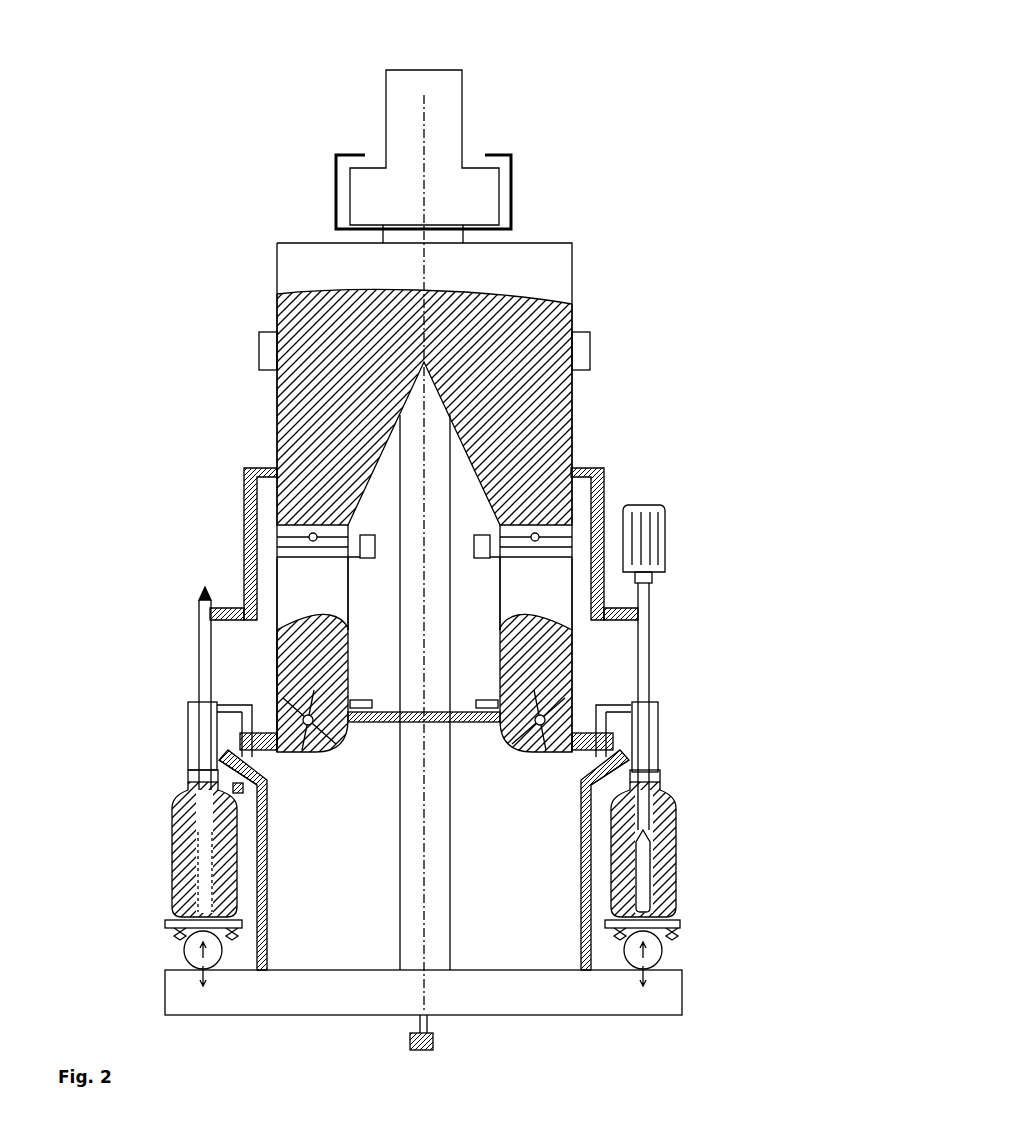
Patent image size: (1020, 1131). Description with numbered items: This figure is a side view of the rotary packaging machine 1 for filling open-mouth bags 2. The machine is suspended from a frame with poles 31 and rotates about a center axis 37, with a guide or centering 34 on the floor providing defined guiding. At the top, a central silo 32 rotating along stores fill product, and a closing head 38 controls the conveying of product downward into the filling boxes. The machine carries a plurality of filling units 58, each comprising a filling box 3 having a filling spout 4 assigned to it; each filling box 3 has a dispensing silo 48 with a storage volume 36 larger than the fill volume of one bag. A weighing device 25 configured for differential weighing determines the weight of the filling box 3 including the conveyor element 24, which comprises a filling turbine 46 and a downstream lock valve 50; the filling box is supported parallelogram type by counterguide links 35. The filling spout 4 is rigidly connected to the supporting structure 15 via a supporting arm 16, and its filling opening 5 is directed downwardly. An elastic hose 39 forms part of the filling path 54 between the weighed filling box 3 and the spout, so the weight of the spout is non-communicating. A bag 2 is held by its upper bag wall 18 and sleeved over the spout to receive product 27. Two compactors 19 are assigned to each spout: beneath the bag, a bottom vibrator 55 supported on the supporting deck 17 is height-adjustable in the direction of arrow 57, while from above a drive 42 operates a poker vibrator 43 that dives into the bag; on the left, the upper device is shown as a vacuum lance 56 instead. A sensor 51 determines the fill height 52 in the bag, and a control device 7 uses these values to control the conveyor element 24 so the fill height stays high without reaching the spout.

The packaging machine 1 is at (168, 78).
The open-mouth bag 2 is at (172, 902).
The filling box 3 is at (293, 551).
The filling spout 4 is at (186, 769).
The filling opening 5 is at (612, 791).
The control device 7 is at (262, 346).
The supporting structure 15 is at (398, 822).
The supporting arm 16 is at (266, 868).
The supporting deck 17 is at (372, 974).
The upper bag wall 18 is at (665, 772).
The compactor 19 is at (676, 588).
The conveyor element 24 is at (565, 632).
The weighing device 25 is at (368, 536).
The product 27 is at (172, 820).
The pole 31 is at (333, 150).
The silo 32 is at (540, 262).
The guide or centering 34 is at (436, 1044).
The counterguide link 35 is at (354, 700).
The storage volume 36 is at (285, 598).
The center axis 37 is at (428, 140).
The closing head 38 is at (598, 495).
The elastic hose 39 is at (256, 762).
The drive 42 is at (672, 524).
The poker vibrator 43 is at (650, 870).
The filling turbine 46 is at (304, 754).
The dispensing silo 48 is at (284, 639).
The lock valve 50 is at (241, 704).
The sensor 51 is at (268, 814).
The fill height 52 is at (660, 778).
The filling path 54 is at (226, 741).
The bottom vibrator 55 is at (680, 931).
The vacuum lance 56 is at (192, 868).
The arrow 57 is at (636, 992).
The filling unit 58 is at (688, 470).